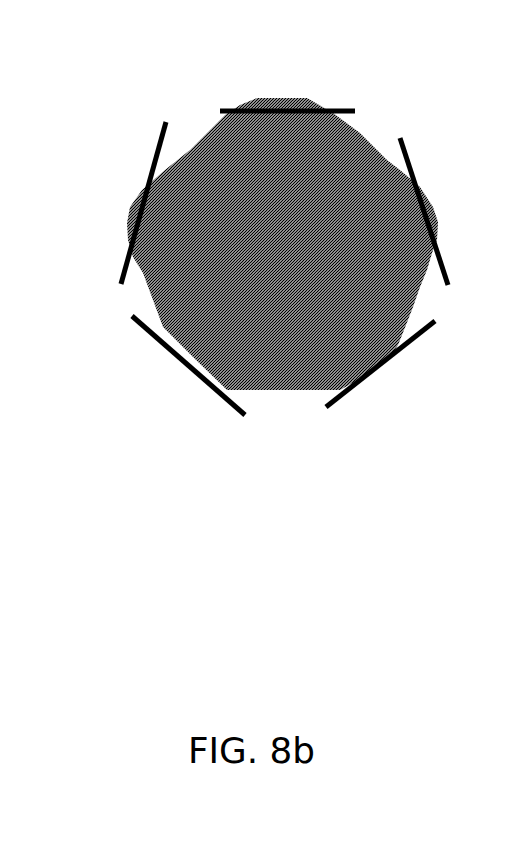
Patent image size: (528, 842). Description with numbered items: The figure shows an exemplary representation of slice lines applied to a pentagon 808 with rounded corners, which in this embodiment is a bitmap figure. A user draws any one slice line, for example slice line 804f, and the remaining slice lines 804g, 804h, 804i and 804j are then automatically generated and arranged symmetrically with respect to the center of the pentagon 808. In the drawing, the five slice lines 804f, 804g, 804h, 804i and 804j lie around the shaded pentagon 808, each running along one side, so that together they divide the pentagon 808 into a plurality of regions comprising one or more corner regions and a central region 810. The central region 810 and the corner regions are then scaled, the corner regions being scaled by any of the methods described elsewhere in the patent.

The slice line 804f is at (122, 255).
The slice line 804g is at (238, 107).
The slice line 804h is at (400, 136).
The slice line 804i is at (326, 406).
The slice line 804j is at (140, 328).
The pentagon 808 is at (284, 318).
The central region 810 is at (342, 129).